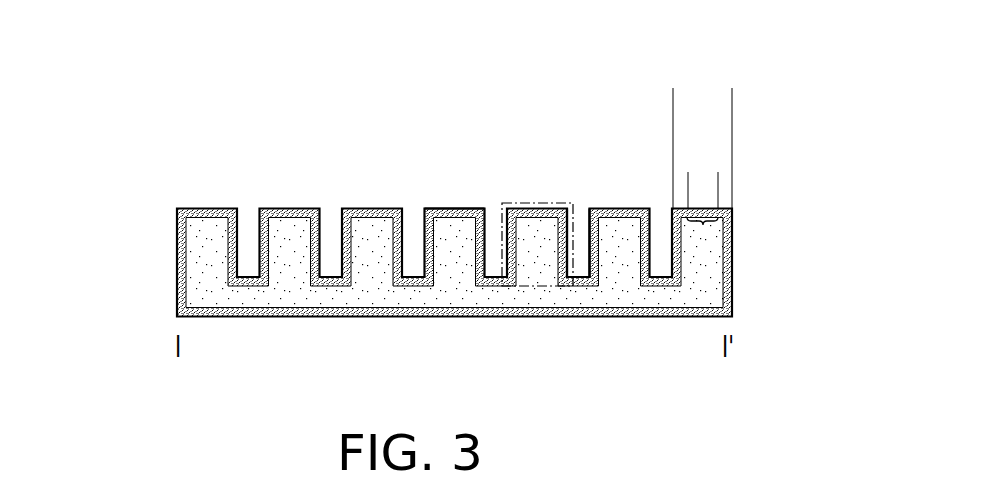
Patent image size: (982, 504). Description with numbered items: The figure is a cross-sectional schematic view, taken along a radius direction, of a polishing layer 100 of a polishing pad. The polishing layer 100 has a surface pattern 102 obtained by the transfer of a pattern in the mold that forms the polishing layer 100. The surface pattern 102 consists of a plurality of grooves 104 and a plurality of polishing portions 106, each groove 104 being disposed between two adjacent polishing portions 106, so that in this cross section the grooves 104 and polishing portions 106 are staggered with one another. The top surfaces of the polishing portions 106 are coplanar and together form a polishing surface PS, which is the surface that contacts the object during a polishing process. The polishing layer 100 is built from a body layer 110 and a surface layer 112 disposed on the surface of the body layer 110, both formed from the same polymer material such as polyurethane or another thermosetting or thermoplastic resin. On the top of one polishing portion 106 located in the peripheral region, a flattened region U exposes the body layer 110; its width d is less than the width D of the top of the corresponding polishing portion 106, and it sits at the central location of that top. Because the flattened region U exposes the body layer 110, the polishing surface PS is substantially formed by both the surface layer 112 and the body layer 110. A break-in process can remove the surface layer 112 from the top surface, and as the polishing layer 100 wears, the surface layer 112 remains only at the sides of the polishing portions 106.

The polishing layer 100 is at (450, 304).
The surface pattern 102 is at (554, 147).
The groove 104 is at (583, 222).
The polishing portion 106 is at (535, 203).
The body layer 110 is at (197, 300).
The surface layer 112 is at (178, 270).
The polishing surface PS is at (460, 209).
The width of the top of the polishing portion D is at (732, 94).
The width of the flattened region d is at (747, 183).
The flattened region U is at (703, 225).